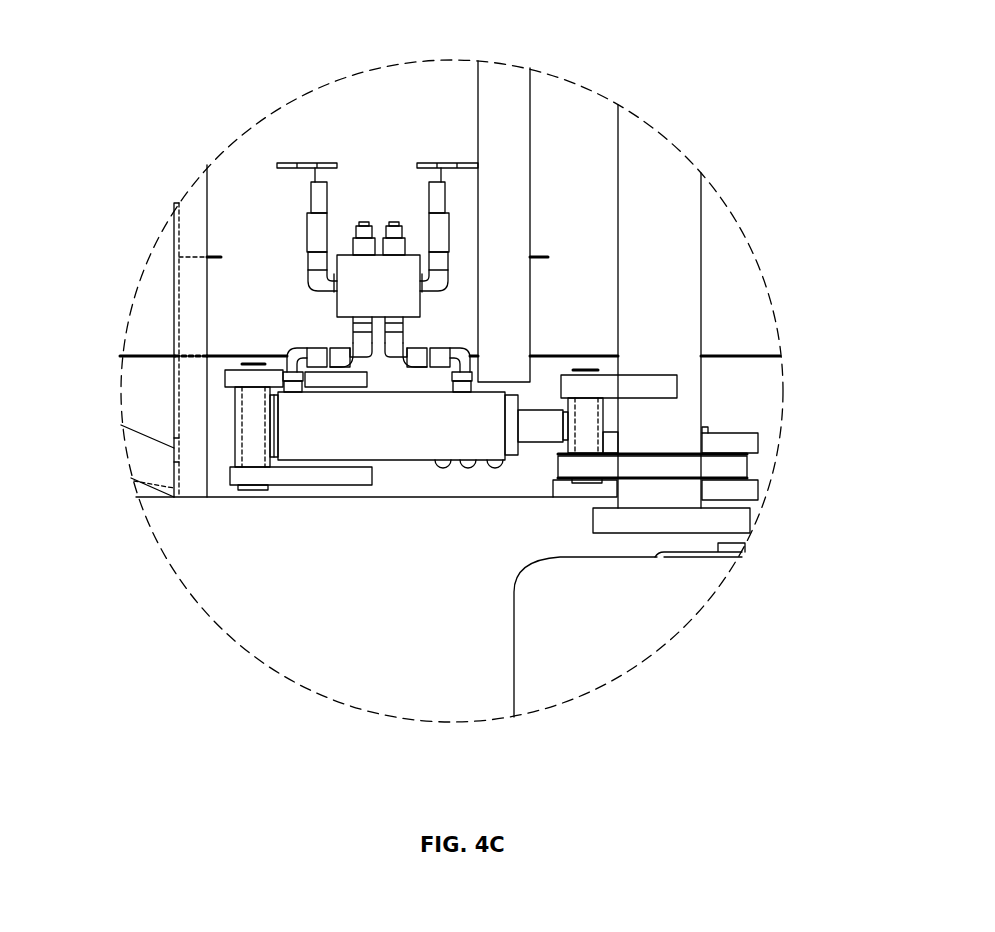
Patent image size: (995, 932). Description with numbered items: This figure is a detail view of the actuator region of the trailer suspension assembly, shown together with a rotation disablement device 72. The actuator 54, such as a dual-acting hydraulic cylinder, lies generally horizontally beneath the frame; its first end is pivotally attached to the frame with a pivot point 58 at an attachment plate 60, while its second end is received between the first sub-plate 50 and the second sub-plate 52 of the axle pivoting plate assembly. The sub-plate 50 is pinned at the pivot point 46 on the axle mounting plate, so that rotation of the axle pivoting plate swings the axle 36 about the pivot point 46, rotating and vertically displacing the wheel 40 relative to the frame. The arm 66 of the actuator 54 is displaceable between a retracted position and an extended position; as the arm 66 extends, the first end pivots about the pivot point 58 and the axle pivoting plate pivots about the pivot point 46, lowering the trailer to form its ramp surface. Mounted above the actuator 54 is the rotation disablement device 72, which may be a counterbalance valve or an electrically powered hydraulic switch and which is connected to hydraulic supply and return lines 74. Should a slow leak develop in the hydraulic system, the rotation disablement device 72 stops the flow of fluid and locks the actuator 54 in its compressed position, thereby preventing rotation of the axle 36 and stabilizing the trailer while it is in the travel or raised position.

The first axle 36 is at (702, 220).
The wheel 40 is at (680, 617).
The pivot point 46 is at (583, 483).
The first sub-plate 50 is at (747, 465).
The second sub-plate 52 is at (677, 385).
The actuator 54 is at (395, 463).
The pivot point 58 is at (252, 492).
The attachment plate 60 is at (234, 366).
The arm 66 is at (533, 435).
The rotation disablement device 72 is at (350, 303).
The hydraulic supply and return lines 74 is at (313, 180).